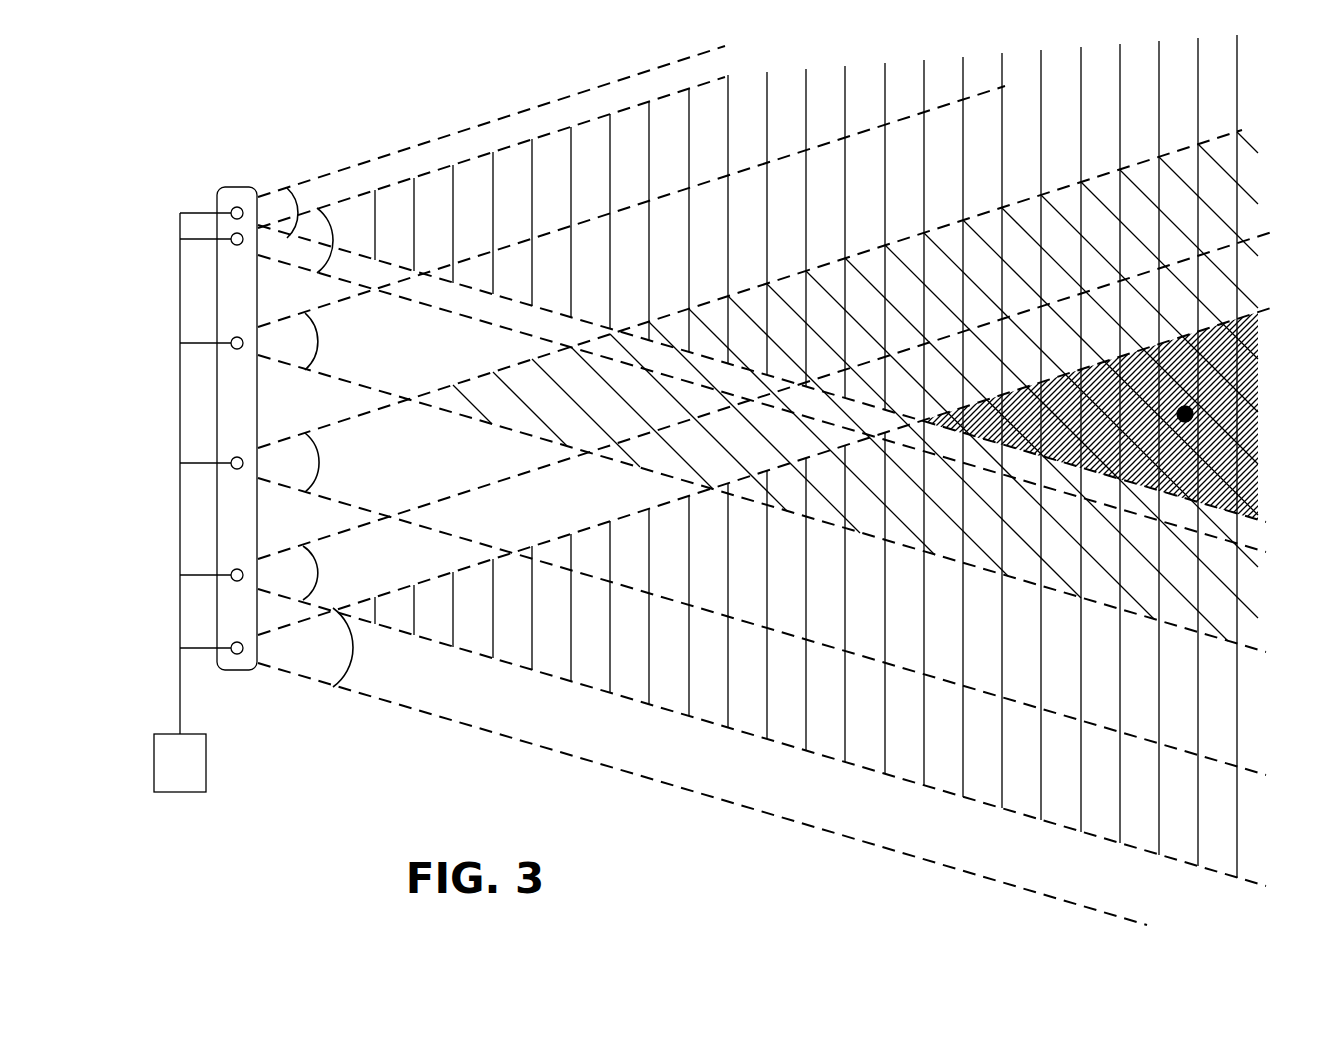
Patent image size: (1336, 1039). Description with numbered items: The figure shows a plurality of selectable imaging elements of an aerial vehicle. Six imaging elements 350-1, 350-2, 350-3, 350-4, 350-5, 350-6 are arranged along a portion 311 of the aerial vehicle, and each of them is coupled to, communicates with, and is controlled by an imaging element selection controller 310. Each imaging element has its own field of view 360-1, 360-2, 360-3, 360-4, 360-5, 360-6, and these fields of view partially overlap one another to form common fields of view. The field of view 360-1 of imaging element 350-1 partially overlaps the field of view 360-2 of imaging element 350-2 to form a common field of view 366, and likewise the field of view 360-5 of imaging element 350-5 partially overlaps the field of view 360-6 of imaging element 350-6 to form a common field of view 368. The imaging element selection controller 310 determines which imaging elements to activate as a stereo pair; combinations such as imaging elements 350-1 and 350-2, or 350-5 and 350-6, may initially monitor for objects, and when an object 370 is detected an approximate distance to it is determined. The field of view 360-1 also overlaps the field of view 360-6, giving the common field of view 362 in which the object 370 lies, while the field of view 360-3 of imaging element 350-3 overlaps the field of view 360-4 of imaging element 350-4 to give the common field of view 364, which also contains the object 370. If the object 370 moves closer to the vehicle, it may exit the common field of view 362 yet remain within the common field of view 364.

The imaging element selection controller 310 is at (195, 768).
The portion of an aerial vehicle 311 is at (218, 191).
The imaging element 350-1 is at (235, 206).
The imaging element 350-2 is at (236, 246).
The imaging element 350-3 is at (236, 350).
The imaging element 350-4 is at (236, 457).
The imaging element 350-5 is at (236, 569).
The imaging element 350-6 is at (236, 645).
The field of view 360-1 is at (298, 200).
The field of view 360-2 is at (333, 237).
The field of view 360-3 is at (318, 356).
The field of view 360-4 is at (314, 475).
The field of view 360-5 is at (310, 600).
The field of view 360-6 is at (352, 646).
The common field of view 362 is at (1089, 426).
The common field of view 364 is at (599, 414).
The common field of view 366 is at (622, 243).
The common field of view 368 is at (722, 644).
The object 370 is at (1194, 412).